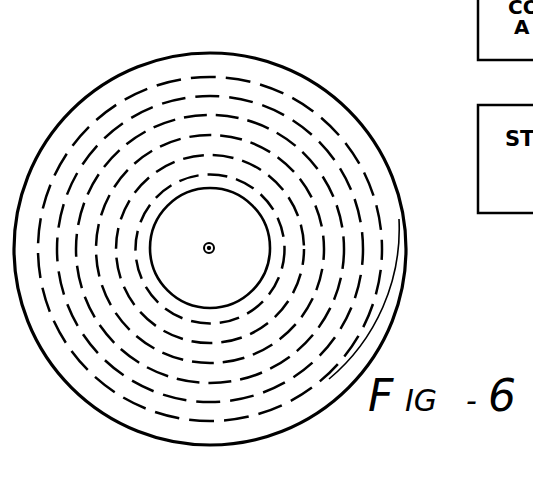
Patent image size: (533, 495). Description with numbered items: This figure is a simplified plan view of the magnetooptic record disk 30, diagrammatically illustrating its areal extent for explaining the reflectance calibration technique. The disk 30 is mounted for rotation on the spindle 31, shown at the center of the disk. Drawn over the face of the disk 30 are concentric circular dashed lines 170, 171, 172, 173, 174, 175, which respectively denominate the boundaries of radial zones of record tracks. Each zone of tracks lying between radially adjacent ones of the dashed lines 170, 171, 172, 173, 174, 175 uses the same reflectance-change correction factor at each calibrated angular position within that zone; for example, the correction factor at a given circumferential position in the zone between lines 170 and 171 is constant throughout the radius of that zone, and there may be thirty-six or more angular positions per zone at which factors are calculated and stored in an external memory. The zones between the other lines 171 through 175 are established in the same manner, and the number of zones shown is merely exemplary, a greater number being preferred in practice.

The magnetooptic record disk 30 is at (337, 106).
The spindle 31 is at (227, 216).
The concentric circular dashed line 170 is at (283, 220).
The concentric circular dashed line 171 is at (305, 233).
The concentric circular dashed line 172 is at (327, 252).
The concentric circular dashed line 173 is at (343, 278).
The concentric circular dashed line 174 is at (350, 312).
The concentric circular dashed line 175 is at (358, 337).